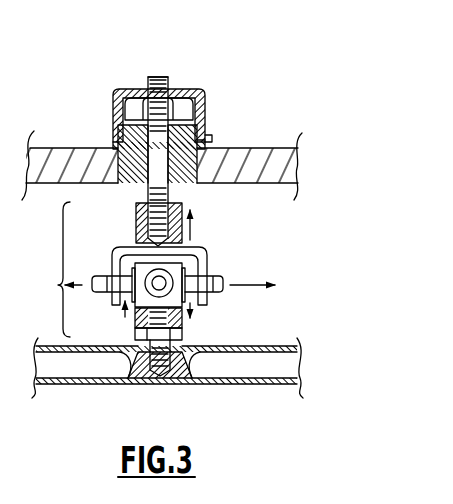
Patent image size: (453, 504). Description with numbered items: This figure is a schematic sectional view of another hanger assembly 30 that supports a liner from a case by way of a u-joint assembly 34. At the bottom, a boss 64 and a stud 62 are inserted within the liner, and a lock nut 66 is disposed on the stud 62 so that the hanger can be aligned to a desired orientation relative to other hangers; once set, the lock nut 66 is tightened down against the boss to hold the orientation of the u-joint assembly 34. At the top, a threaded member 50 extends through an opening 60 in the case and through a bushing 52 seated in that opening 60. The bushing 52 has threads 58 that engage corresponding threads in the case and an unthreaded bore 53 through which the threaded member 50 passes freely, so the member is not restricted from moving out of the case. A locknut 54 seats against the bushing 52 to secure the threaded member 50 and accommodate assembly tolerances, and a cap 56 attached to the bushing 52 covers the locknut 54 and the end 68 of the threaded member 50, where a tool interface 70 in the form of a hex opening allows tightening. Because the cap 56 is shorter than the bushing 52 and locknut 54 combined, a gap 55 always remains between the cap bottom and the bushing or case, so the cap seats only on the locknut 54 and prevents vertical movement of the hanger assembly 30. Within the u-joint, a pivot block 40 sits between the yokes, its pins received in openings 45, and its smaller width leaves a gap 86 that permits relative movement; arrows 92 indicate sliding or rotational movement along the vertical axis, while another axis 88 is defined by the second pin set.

The hanger assembly 30 is at (277, 71).
The u-joint assembly 34 is at (55, 269).
The pivot block 40 is at (188, 270).
The openings 45 is at (172, 283).
The threaded member 50 is at (157, 148).
The bushing 52 is at (118, 147).
The bore 53 is at (199, 168).
The locknut 54 is at (118, 112).
The gap 55 is at (216, 123).
The cap 56 is at (113, 93).
The threads 58 is at (230, 172).
The opening 60 is at (198, 189).
The stud 62 is at (137, 387).
The boss 64 is at (188, 351).
The lock nut 66 is at (183, 333).
The end 68 is at (148, 81).
The tool interface 70 is at (163, 77).
The gap 86 is at (125, 318).
The axis 88 is at (232, 286).
The arrows 92 is at (192, 230).